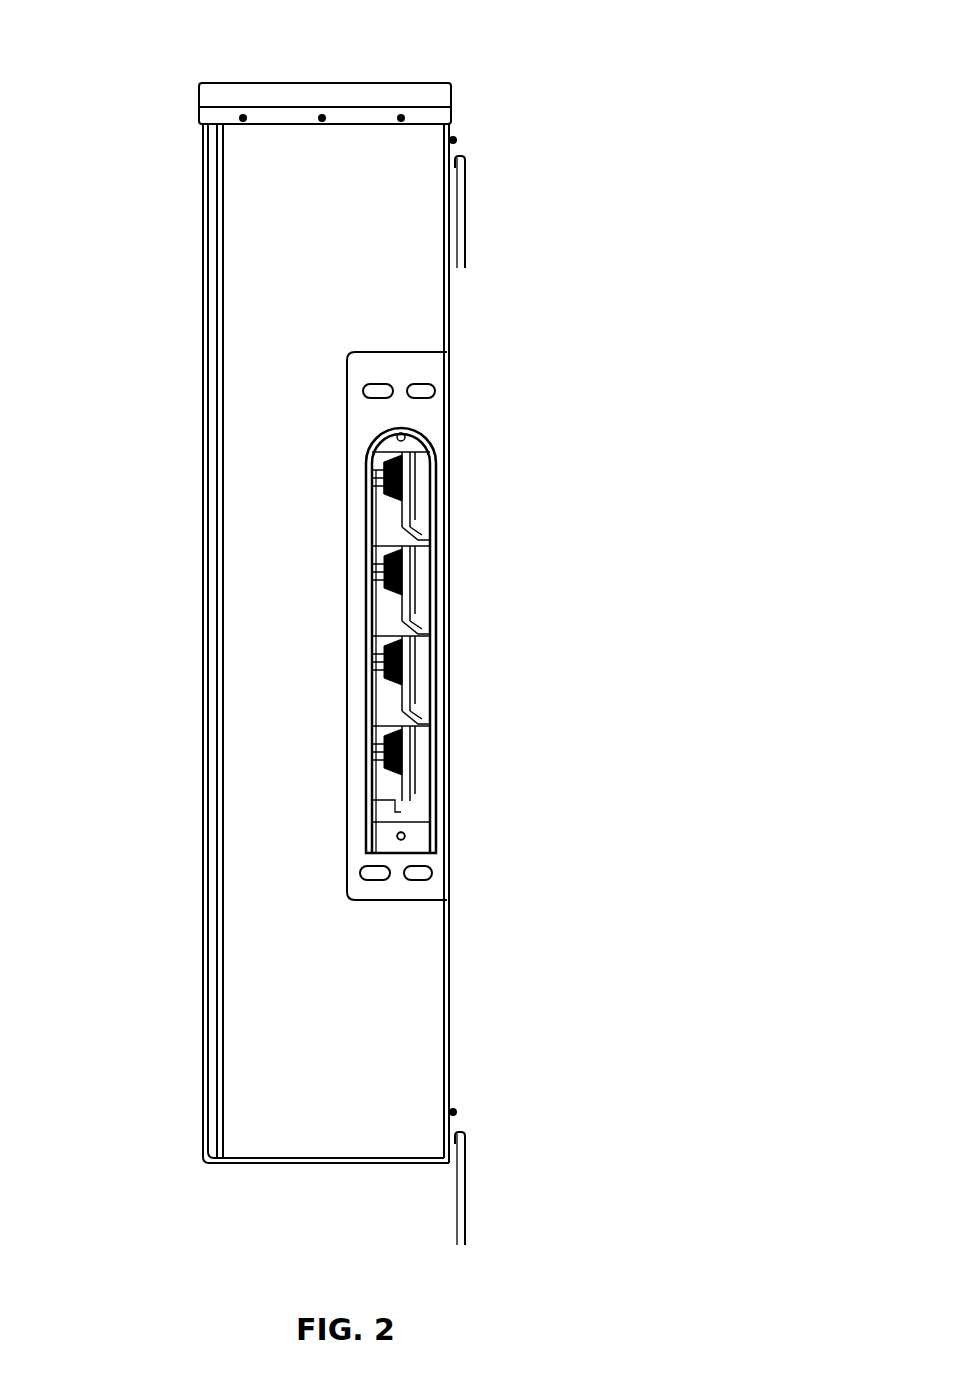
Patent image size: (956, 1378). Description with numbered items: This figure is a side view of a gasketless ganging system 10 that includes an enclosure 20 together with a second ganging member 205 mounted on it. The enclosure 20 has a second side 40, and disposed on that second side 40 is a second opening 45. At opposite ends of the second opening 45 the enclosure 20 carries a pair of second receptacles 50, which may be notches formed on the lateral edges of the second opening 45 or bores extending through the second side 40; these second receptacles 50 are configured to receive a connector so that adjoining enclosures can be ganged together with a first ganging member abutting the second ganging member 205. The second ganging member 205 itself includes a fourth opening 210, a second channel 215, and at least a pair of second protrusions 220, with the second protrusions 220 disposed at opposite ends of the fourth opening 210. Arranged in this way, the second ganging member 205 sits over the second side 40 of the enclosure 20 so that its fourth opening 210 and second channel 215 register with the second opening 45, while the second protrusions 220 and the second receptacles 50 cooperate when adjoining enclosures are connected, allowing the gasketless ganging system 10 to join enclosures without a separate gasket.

The gasketless ganging system 10 is at (746, 73).
The enclosure 20 is at (200, 92).
The second side 40 is at (265, 170).
The second opening 45 is at (415, 545).
The second receptacles 50 is at (413, 450).
The second ganging member 205 is at (452, 413).
The fourth opening 210 is at (368, 515).
The second channel 215 is at (368, 546).
The second protrusions 220 is at (386, 385).